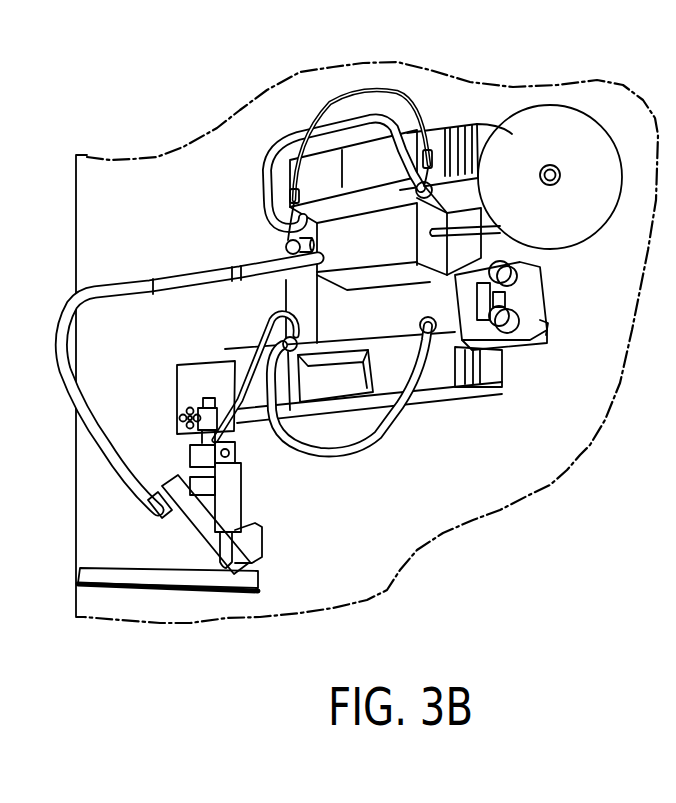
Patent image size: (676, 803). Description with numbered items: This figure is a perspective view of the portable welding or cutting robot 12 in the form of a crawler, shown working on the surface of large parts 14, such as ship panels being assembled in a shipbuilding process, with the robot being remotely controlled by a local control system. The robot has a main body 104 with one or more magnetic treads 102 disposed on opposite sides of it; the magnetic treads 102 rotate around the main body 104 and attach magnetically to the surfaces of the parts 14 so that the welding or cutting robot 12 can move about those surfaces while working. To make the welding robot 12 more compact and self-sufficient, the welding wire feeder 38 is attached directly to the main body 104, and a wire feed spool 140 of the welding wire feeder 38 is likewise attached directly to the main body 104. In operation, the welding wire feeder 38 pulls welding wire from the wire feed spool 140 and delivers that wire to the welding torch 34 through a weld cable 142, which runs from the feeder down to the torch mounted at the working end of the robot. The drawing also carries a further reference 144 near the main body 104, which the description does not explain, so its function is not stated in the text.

The welding or cutting robot 12 is at (538, 362).
The parts 14 is at (431, 529).
The welding torch 34 is at (200, 543).
The welding wire feeder 38 is at (360, 237).
The magnetic treads 102 is at (445, 130).
The main body 104 is at (440, 297).
The wire feed spool 140 is at (555, 130).
The weld cable 142 is at (68, 293).
The control line 144 is at (548, 323).